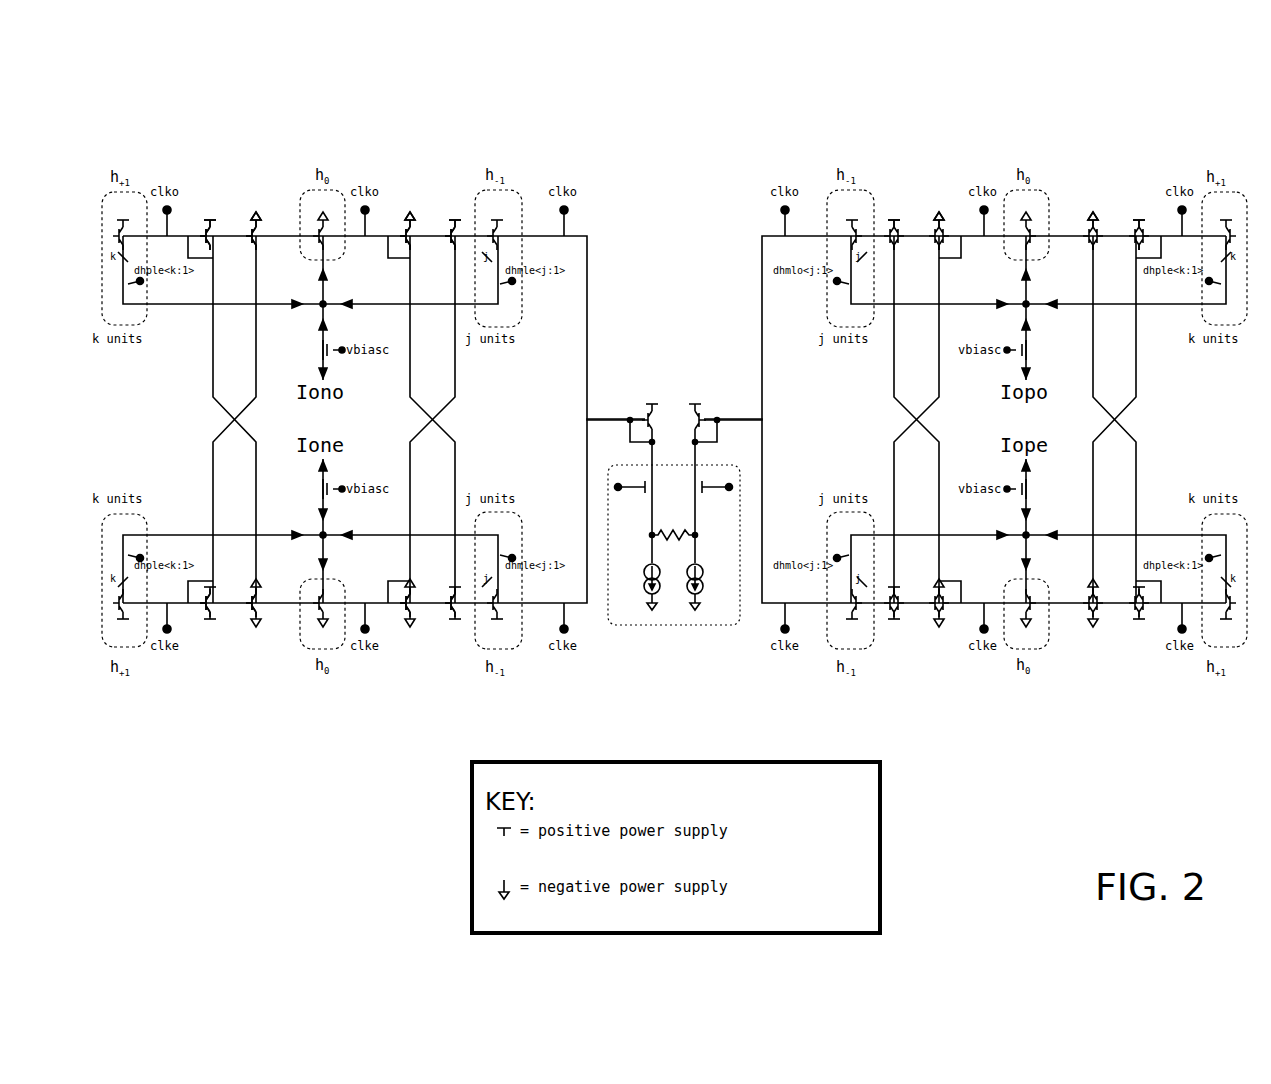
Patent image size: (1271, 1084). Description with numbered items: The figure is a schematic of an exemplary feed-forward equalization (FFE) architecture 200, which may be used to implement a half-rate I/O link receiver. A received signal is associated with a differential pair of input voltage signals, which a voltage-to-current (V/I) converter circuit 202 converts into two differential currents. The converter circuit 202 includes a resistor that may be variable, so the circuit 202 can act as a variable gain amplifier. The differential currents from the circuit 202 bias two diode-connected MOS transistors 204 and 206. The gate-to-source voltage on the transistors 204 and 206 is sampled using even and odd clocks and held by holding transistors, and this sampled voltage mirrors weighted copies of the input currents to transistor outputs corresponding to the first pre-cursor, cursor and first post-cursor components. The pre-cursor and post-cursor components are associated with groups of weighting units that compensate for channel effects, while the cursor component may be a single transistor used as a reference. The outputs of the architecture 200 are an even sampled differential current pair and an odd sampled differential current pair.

The FFE architecture 200 is at (245, 113).
The voltage-to-current (V/I) converter circuit 202 is at (741, 622).
The transistor 204 is at (643, 401).
The transistor 206 is at (710, 401).